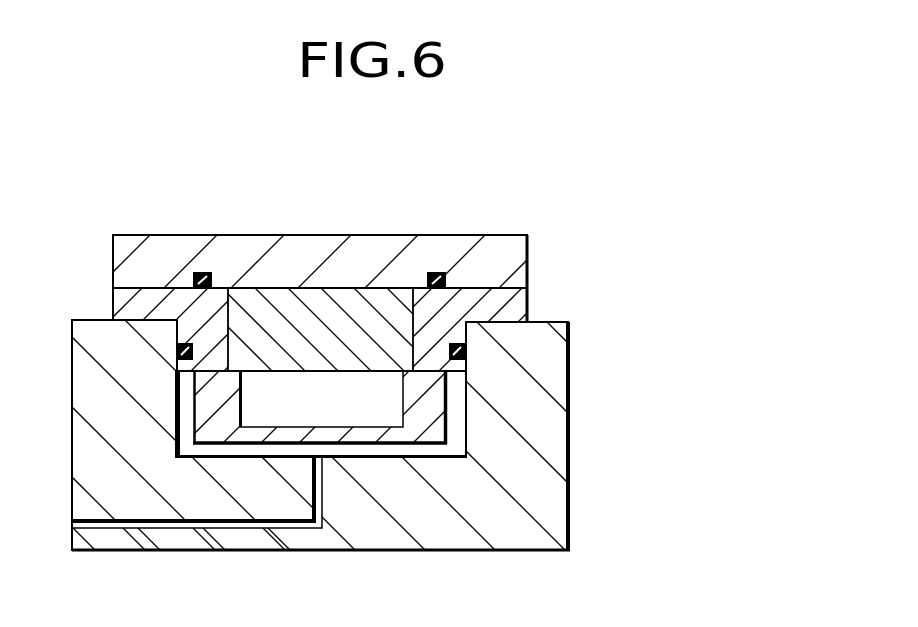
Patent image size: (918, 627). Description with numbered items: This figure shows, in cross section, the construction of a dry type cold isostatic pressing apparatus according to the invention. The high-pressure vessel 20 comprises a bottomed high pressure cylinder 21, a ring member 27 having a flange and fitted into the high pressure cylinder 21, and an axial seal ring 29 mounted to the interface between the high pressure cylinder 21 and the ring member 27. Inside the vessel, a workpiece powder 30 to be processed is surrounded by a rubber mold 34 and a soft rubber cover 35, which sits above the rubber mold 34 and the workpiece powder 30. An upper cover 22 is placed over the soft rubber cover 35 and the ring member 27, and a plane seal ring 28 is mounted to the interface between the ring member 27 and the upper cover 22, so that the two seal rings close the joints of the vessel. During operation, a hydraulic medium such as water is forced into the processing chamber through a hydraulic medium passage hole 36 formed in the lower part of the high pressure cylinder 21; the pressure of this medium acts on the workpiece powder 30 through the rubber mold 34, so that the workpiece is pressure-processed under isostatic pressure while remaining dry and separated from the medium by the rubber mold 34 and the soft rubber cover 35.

The high-pressure vessel 20 is at (575, 289).
The high pressure cylinder 21 is at (513, 468).
The upper cover 22 is at (393, 313).
The ring member 27 is at (527, 303).
The plane seal ring 28 is at (335, 221).
The axial seal ring 29 is at (465, 350).
The workpiece powder 30 is at (358, 405).
The rubber mold 34 is at (425, 405).
The soft rubber cover 35 is at (399, 313).
The hydraulic medium passage hole 36 is at (210, 525).